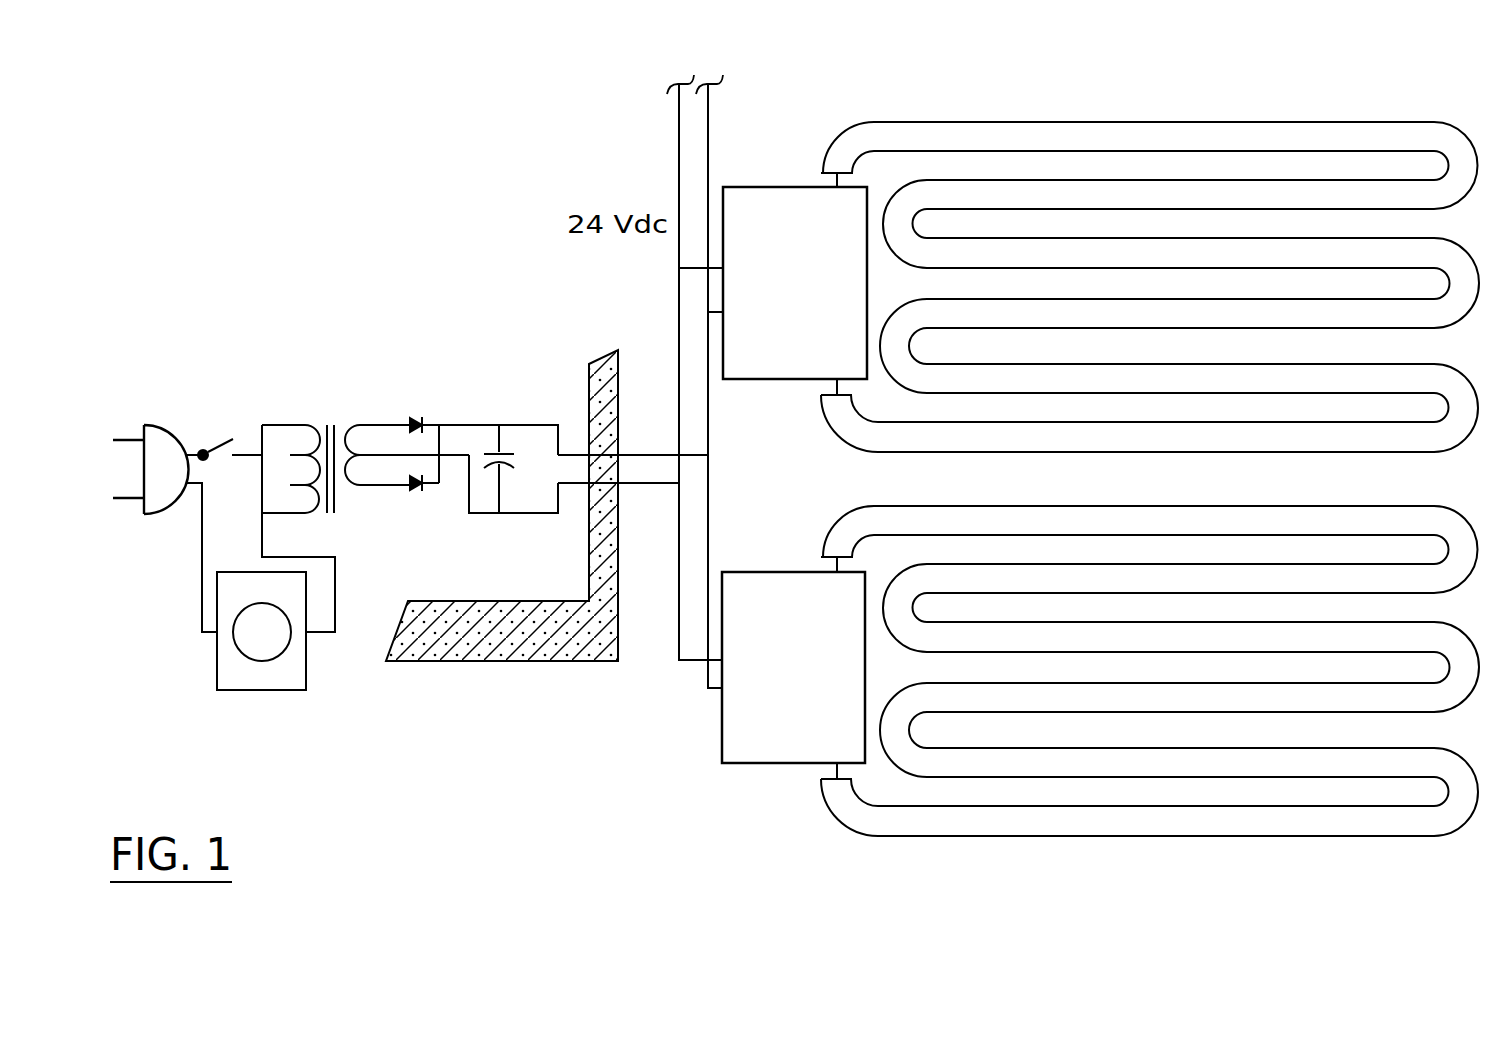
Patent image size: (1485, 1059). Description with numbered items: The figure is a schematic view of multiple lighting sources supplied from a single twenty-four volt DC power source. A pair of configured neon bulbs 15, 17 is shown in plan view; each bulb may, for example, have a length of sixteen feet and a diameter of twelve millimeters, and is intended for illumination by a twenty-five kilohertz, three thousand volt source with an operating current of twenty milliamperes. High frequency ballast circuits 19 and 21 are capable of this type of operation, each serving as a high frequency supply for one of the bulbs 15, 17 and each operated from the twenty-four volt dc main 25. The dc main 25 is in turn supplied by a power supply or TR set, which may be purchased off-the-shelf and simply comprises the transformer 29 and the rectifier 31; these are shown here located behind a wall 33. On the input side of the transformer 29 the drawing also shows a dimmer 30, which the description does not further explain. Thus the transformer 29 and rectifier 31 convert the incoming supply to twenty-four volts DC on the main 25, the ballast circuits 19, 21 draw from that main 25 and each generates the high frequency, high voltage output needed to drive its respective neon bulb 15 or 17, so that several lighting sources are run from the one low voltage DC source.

The neon bulb 15 is at (958, 121).
The neon bulb 17 is at (957, 512).
The high frequency ballast circuit 19 is at (802, 342).
The high frequency ballast circuit 21 is at (803, 718).
The 24 volt dc main 25 is at (678, 303).
The transformer 29 is at (378, 417).
The dimmer 30 is at (306, 684).
The rectifier 31 is at (447, 425).
The wall 33 is at (600, 582).